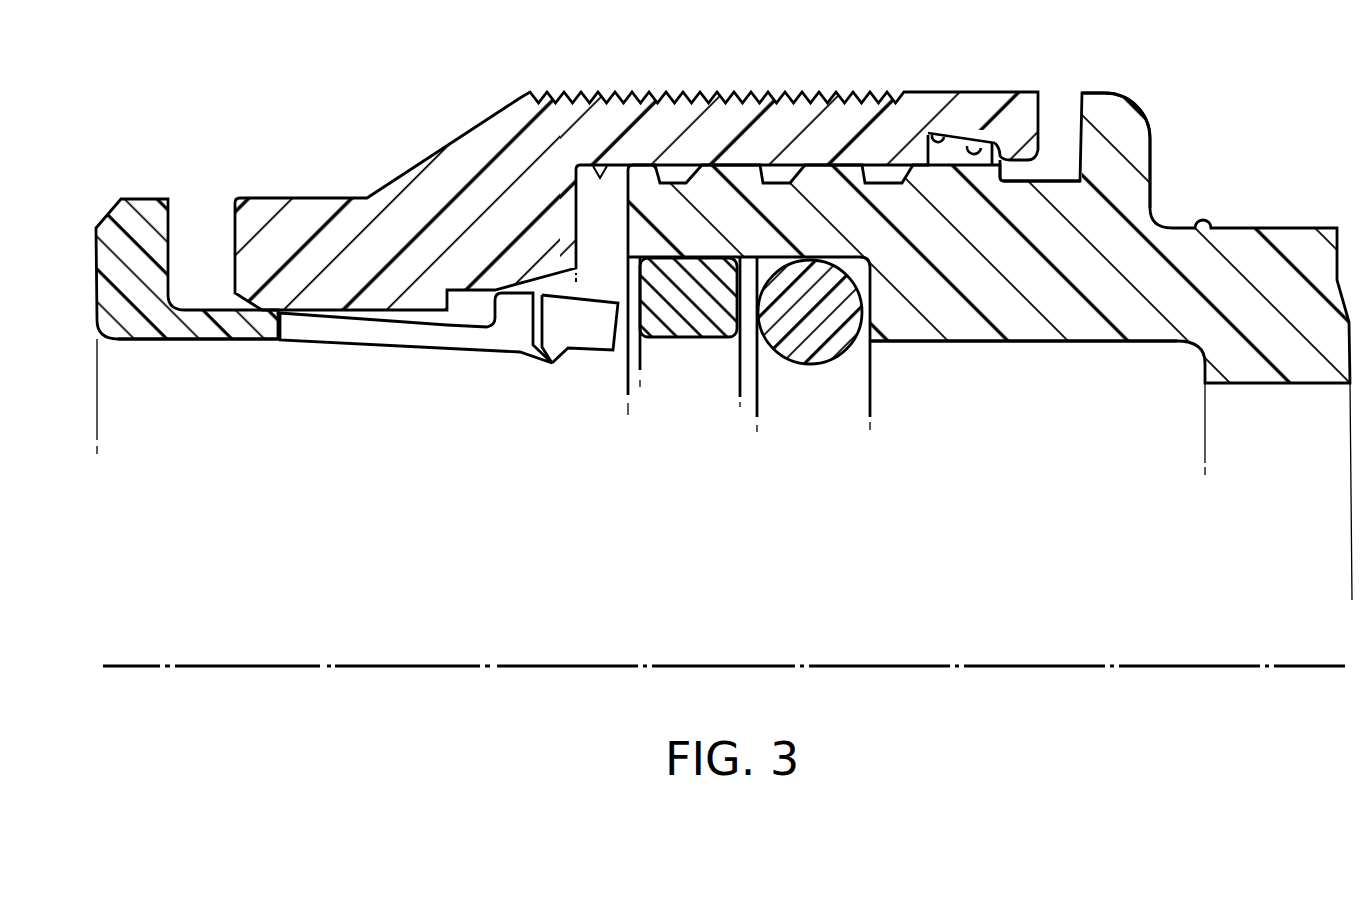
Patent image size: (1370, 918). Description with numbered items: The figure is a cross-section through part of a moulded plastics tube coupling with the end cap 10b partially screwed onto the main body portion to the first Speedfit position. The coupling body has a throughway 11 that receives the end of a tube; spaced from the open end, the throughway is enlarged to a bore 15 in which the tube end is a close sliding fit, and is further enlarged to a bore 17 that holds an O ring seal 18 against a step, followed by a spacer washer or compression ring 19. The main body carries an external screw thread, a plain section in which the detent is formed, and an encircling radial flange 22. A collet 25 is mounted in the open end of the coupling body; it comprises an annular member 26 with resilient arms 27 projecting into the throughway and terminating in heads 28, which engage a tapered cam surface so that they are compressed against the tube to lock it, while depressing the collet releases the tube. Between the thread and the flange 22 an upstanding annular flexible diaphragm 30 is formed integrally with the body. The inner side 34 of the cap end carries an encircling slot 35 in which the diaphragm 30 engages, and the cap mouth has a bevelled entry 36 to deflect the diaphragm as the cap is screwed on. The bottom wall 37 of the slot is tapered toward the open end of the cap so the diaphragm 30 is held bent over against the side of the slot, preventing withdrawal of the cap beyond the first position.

The end cap 10b is at (440, 158).
The throughway 11 is at (1260, 385).
The enlarged bore 15 is at (1017, 343).
The enlarged bore 17 is at (773, 262).
The O ring seal 18 is at (816, 353).
The spacer washer or compression ring 19 is at (686, 333).
The radial flange 22 is at (1108, 97).
The collet 25 is at (136, 207).
The annular member 26 is at (146, 340).
The resilient arms 27 is at (298, 340).
The heads 28 is at (570, 340).
The annular flexible diaphragm 30 is at (1005, 148).
The inner side 34 is at (600, 168).
The encircling slot 35 is at (938, 132).
The bevelled entry 36 is at (1004, 156).
The bottom wall 37 is at (974, 140).